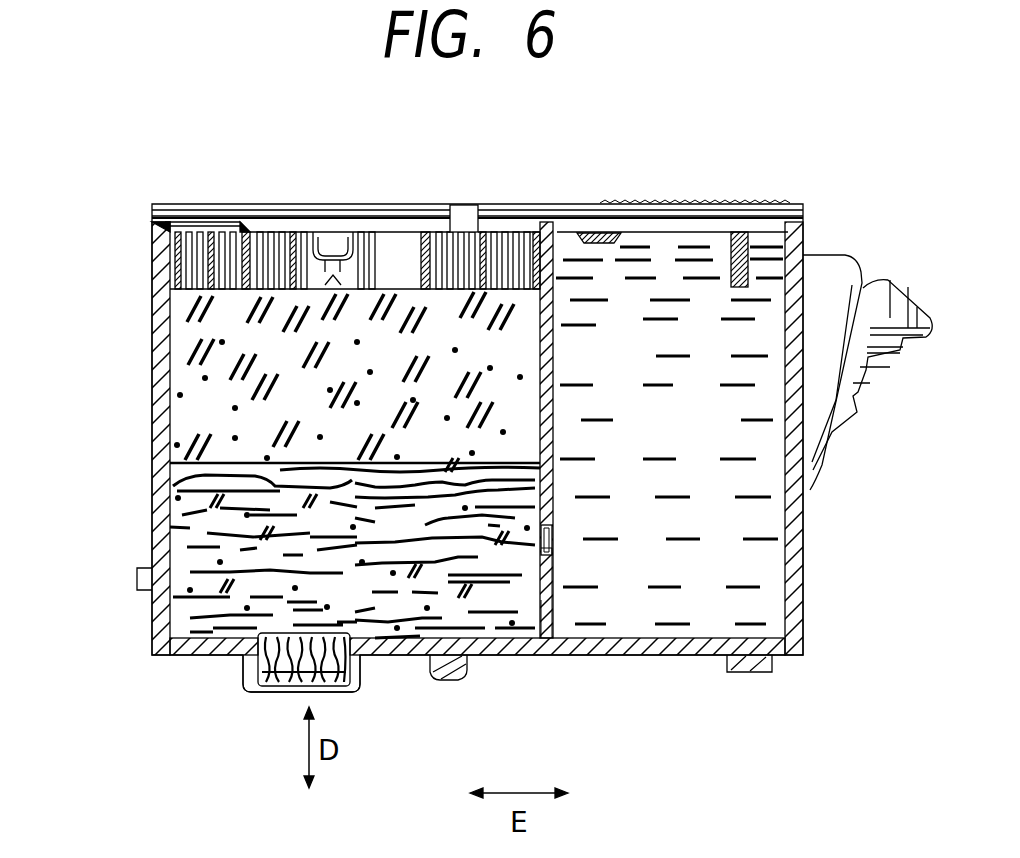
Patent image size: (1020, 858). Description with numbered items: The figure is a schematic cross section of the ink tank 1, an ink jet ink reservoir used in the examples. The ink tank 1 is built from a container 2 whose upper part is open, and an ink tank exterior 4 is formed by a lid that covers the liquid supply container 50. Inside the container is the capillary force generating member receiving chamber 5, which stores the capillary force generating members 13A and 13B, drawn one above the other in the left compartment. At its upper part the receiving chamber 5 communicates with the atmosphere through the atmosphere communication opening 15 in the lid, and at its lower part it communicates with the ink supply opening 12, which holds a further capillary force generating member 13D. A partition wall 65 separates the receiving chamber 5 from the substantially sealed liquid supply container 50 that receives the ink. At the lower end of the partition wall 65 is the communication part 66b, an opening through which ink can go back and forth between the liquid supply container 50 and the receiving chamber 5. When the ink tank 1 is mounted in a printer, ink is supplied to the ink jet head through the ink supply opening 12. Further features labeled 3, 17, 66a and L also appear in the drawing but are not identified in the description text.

The ink tank 1 is at (227, 178).
The container 2 is at (154, 287).
The lid 3 is at (190, 203).
The ink tank exterior 4 is at (84, 163).
The capillary force generating member receiving chamber 5 is at (250, 362).
The ink supply opening 12 is at (245, 670).
The capillary force generating member 13A is at (225, 422).
The capillary force generating member 13B is at (195, 530).
The capillary force generating member 13D is at (363, 682).
The atmosphere communication opening 15 is at (458, 204).
The communication opening 17 is at (558, 536).
The liquid supply container 50 is at (695, 431).
The partition wall 65 is at (553, 354).
The lower communication passage 66a is at (556, 548).
The communication part 66b is at (548, 638).
The liquid level L is at (192, 476).